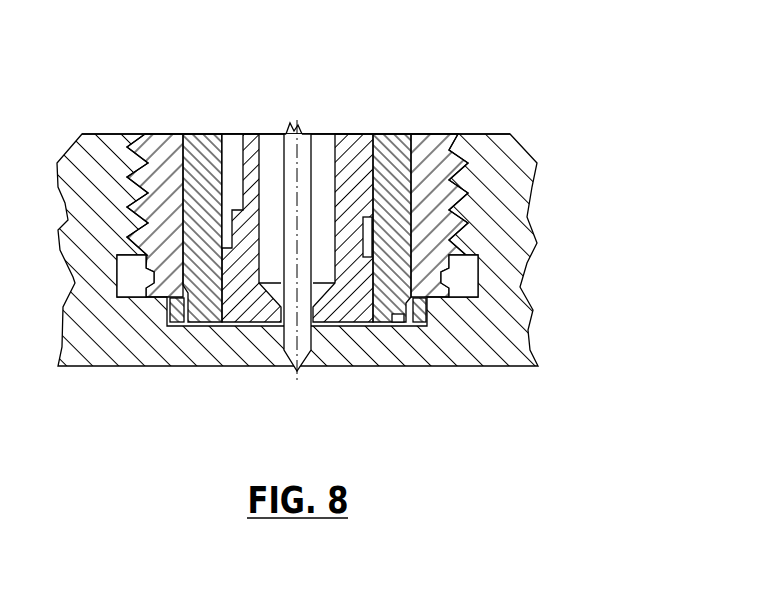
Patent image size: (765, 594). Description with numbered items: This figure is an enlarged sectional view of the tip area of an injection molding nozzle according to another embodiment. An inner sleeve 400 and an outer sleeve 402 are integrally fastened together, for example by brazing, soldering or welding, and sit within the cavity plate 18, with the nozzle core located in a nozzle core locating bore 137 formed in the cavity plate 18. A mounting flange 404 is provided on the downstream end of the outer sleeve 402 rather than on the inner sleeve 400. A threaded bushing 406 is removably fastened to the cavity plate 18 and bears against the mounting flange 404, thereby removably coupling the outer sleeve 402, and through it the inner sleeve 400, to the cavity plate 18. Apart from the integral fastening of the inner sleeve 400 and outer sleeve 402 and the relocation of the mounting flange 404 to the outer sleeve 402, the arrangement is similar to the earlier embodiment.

The cavity plate 18 is at (524, 167).
The nozzle core locating bore 137 is at (424, 320).
The inner sleeve 400 is at (352, 134).
The outer sleeve 402 is at (390, 134).
The mounting flange 404 is at (397, 317).
The threaded bushing 406 is at (433, 134).